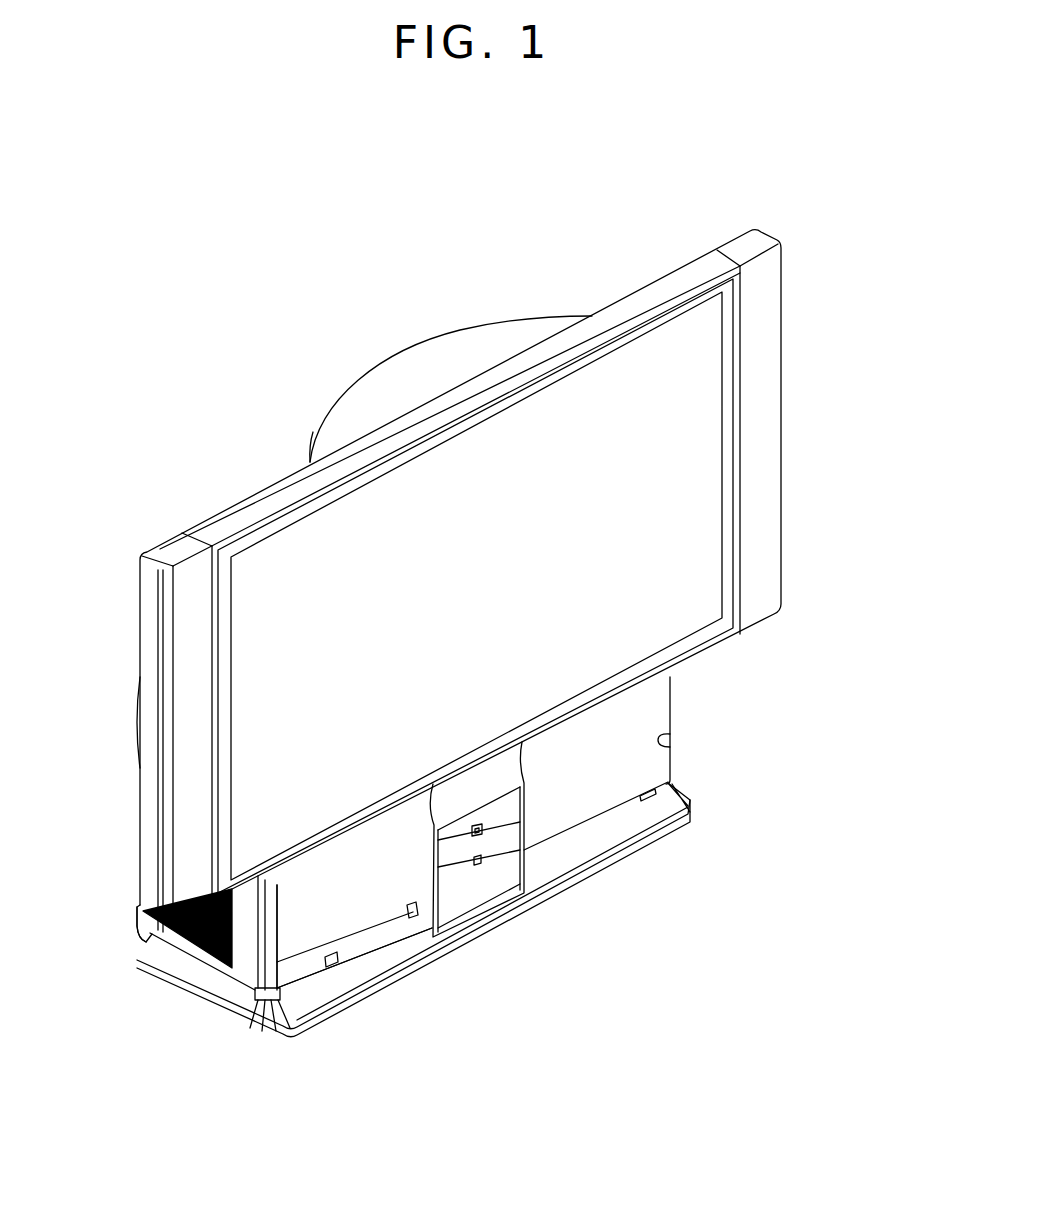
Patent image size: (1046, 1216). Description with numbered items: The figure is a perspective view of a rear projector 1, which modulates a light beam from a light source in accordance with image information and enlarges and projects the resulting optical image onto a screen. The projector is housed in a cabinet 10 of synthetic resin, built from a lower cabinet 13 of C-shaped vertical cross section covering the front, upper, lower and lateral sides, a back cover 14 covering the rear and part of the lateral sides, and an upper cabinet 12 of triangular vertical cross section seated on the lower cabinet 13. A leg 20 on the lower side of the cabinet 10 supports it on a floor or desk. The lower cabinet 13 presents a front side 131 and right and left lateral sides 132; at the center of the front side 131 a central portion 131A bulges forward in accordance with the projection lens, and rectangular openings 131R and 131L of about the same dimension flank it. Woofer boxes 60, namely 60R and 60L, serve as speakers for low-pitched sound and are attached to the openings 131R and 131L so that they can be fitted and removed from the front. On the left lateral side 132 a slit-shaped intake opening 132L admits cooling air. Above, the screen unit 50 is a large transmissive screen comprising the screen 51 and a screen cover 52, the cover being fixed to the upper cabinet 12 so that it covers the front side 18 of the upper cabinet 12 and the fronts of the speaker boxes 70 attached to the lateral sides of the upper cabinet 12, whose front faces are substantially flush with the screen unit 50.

The rear projector 1 is at (236, 312).
The cabinet 10 is at (238, 958).
The upper cabinet 12 is at (344, 409).
The lower cabinet 13 is at (253, 958).
The back cover 14 is at (137, 757).
The front side of the upper cabinet 18 is at (652, 289).
The leg 20 is at (588, 852).
The screen unit 50 is at (843, 337).
The screen 51 is at (693, 425).
The screen cover 52 is at (690, 298).
The woofer box 60 is at (522, 858).
The left woofer box 60L is at (367, 915).
The right woofer box 60R is at (602, 788).
The speaker box 70 is at (768, 309).
The front side 131 is at (317, 970).
The central portion 131A is at (486, 785).
The left opening 131L is at (410, 900).
The right opening 131R is at (668, 745).
The lateral side 132 is at (297, 1030).
The intake opening 132L is at (180, 948).